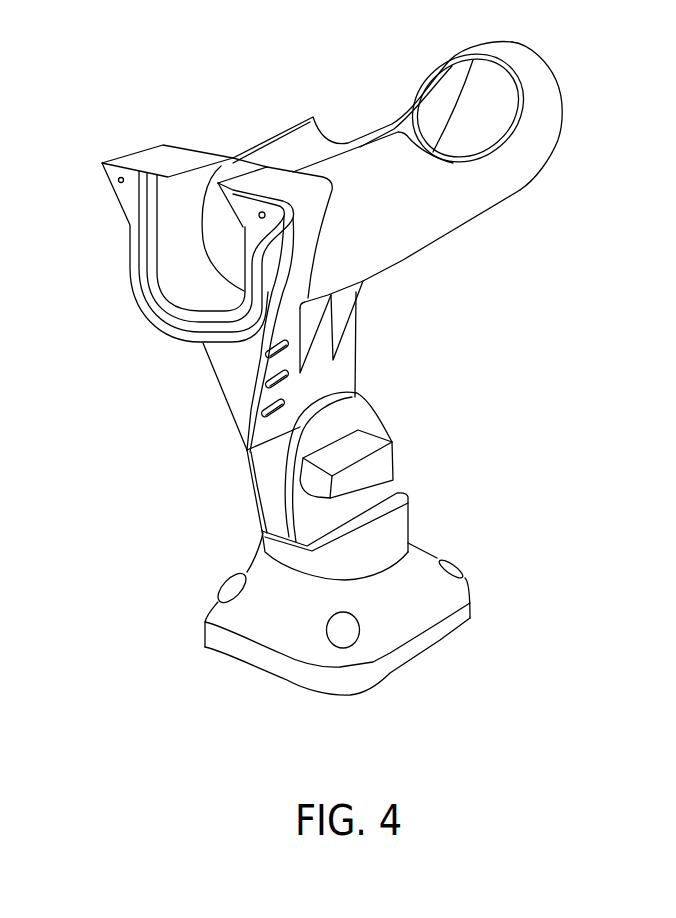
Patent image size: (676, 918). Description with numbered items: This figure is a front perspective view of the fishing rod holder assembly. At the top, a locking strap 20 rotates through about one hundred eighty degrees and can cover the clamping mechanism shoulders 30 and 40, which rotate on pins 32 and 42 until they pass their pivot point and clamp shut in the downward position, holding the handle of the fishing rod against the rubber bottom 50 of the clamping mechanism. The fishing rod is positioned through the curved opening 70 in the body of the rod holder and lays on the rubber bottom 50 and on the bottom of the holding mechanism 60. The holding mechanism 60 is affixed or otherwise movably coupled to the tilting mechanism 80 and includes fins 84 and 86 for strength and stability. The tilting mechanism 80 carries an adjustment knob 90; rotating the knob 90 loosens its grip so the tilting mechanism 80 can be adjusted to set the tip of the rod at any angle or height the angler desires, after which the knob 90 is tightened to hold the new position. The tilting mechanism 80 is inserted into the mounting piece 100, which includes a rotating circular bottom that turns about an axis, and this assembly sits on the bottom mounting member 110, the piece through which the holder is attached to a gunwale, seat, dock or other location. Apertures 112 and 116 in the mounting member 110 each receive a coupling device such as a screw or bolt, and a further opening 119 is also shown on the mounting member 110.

The locking strap 20 is at (258, 382).
The clamping mechanism shoulder 30 is at (277, 182).
The pin 32 is at (259, 215).
The clamping mechanism shoulder 40 is at (152, 157).
The pin 42 is at (118, 180).
The rubber bottom 50 is at (185, 294).
The holding mechanism 60 is at (465, 212).
The curved opening 70 is at (550, 93).
The tilting mechanism 80 is at (343, 380).
The fin 84 is at (318, 316).
The fin 86 is at (338, 337).
The adjustment knob 90 is at (383, 455).
The mounting piece 100 is at (403, 532).
The bottom mounting member 110 is at (467, 612).
The aperture 112 is at (349, 644).
The aperture 116 is at (456, 566).
The slot 119 is at (222, 593).